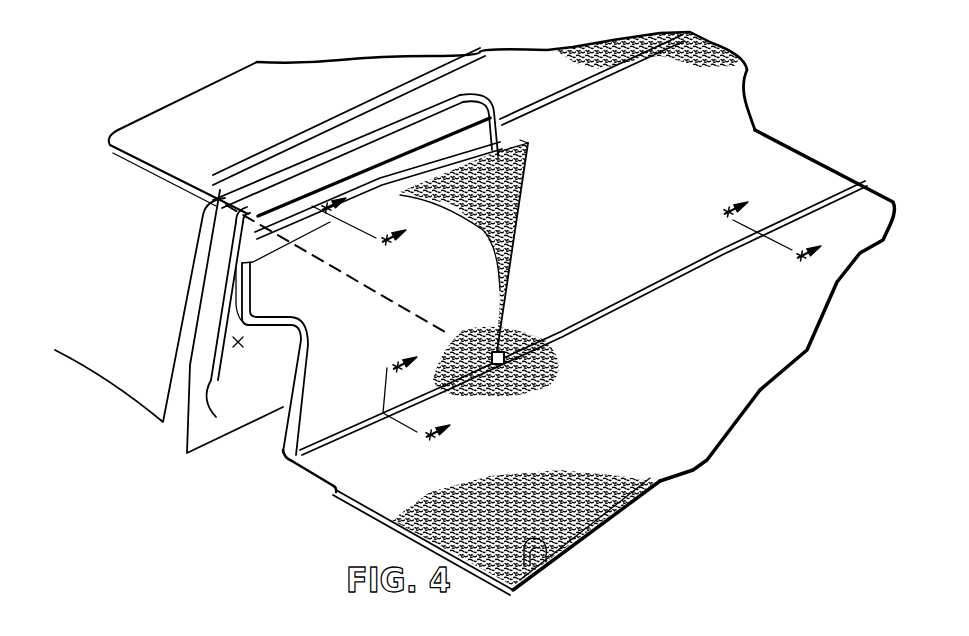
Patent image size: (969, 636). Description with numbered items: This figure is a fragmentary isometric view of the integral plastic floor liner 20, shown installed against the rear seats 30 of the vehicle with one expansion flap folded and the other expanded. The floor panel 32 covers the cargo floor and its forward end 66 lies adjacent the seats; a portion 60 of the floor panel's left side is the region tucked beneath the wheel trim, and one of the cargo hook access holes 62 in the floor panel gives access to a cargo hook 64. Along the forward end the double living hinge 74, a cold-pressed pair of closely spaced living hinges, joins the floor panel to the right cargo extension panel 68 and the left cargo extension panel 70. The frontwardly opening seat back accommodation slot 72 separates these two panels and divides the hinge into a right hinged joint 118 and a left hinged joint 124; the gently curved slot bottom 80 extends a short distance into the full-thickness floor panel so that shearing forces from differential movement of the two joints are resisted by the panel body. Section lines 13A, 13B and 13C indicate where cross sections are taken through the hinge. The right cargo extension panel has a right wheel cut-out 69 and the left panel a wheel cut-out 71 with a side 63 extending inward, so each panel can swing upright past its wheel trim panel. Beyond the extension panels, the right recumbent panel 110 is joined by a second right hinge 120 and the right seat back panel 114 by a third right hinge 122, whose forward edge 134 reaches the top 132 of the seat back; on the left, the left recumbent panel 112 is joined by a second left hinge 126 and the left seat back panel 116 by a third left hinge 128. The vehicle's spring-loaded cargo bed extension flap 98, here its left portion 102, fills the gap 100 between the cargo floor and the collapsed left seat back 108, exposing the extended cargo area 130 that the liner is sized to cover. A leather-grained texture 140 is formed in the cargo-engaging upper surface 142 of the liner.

The floor liner 20 is at (262, 503).
The rear seats 30 is at (175, 372).
The floor panel 32 is at (646, 437).
The portion of floor panel left side 60 is at (392, 520).
The cargo hook access holes 62 is at (553, 570).
The side of wheel cut-out 63 is at (325, 488).
The cargo hooks 64 is at (608, 527).
The forward end of floor panel 66 is at (578, 325).
The right cargo extension panel 68 is at (645, 171).
The right wheel cut-out 69 is at (762, 132).
The left cargo extension panel 70 is at (446, 288).
The left wheel cut-out 71 is at (318, 342).
The seat back accommodation slot 72 is at (517, 240).
The double living hinge 74 is at (400, 92).
The slot bottom 80 is at (502, 373).
The cargo bed extension flap 98 is at (242, 290).
The gap 100 is at (287, 413).
The left portion of cargo bed extension flap 102 is at (240, 318).
The left seat back 108 is at (280, 398).
The right recumbent panel 110 is at (541, 80).
The left recumbent panel 112 is at (240, 343).
The right seat back panel 114 is at (335, 99).
The left seat back panel 116 is at (455, 159).
The right hinged joint 118 is at (663, 278).
The second right hinge 120 is at (603, 78).
The third right hinge 122 is at (293, 139).
The left hinged joint 124 is at (322, 440).
The second left hinge 126 is at (522, 146).
The third left hinge 128 is at (230, 402).
The extended cargo area 130 is at (612, 37).
The top of seat back 132 is at (195, 181).
The right seat back panel forward edge 134 is at (176, 100).
The leather-grained texture 140 is at (540, 497).
The upper surface 142 is at (660, 485).
The section line 13A is at (796, 223).
The section line 13B is at (440, 392).
The section line 13C is at (382, 213).